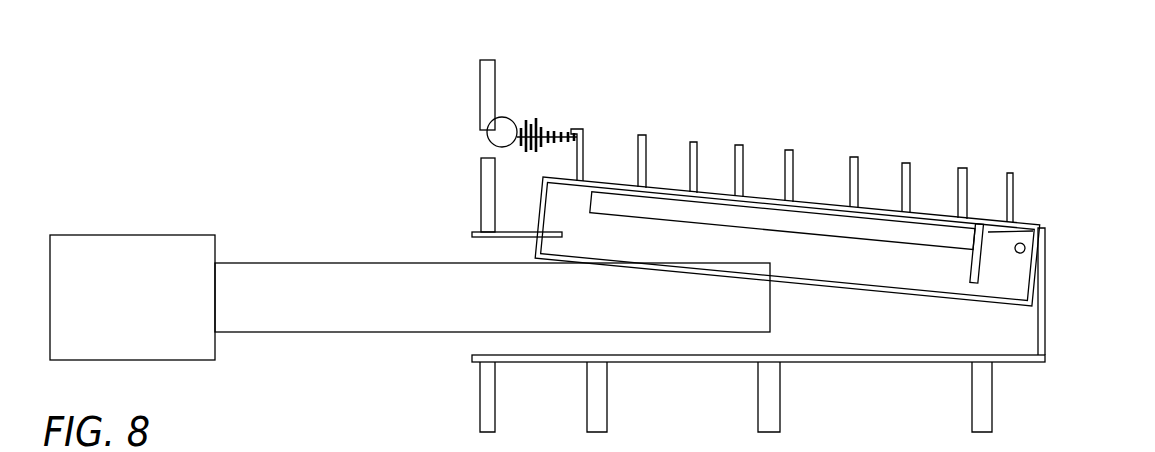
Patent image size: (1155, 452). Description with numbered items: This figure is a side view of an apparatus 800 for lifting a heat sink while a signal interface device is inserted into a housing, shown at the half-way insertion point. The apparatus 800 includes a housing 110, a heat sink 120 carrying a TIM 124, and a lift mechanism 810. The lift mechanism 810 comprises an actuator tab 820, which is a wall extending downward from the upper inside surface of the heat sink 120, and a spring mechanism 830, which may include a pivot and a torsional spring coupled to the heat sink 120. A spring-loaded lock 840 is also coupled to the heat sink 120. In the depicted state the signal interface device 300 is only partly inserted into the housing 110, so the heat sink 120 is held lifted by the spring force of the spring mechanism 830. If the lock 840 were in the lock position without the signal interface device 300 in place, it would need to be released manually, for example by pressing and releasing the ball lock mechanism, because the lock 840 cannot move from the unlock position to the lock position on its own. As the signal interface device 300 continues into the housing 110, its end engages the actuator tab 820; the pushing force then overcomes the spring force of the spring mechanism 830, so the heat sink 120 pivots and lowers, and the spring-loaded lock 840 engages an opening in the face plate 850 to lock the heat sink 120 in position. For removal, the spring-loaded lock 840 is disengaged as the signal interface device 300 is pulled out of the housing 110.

The apparatus 800 is at (651, 50).
The signal interface device 300 is at (113, 240).
The spring-loaded lock 840 is at (505, 118).
The lift mechanism 810 is at (1069, 145).
The actuator tab 820 is at (972, 267).
The spring mechanism 830 is at (1023, 241).
The TIM 124 is at (812, 213).
The heat sink 120 is at (1014, 181).
The housing 110 is at (1047, 302).
The face plate 850 is at (480, 410).